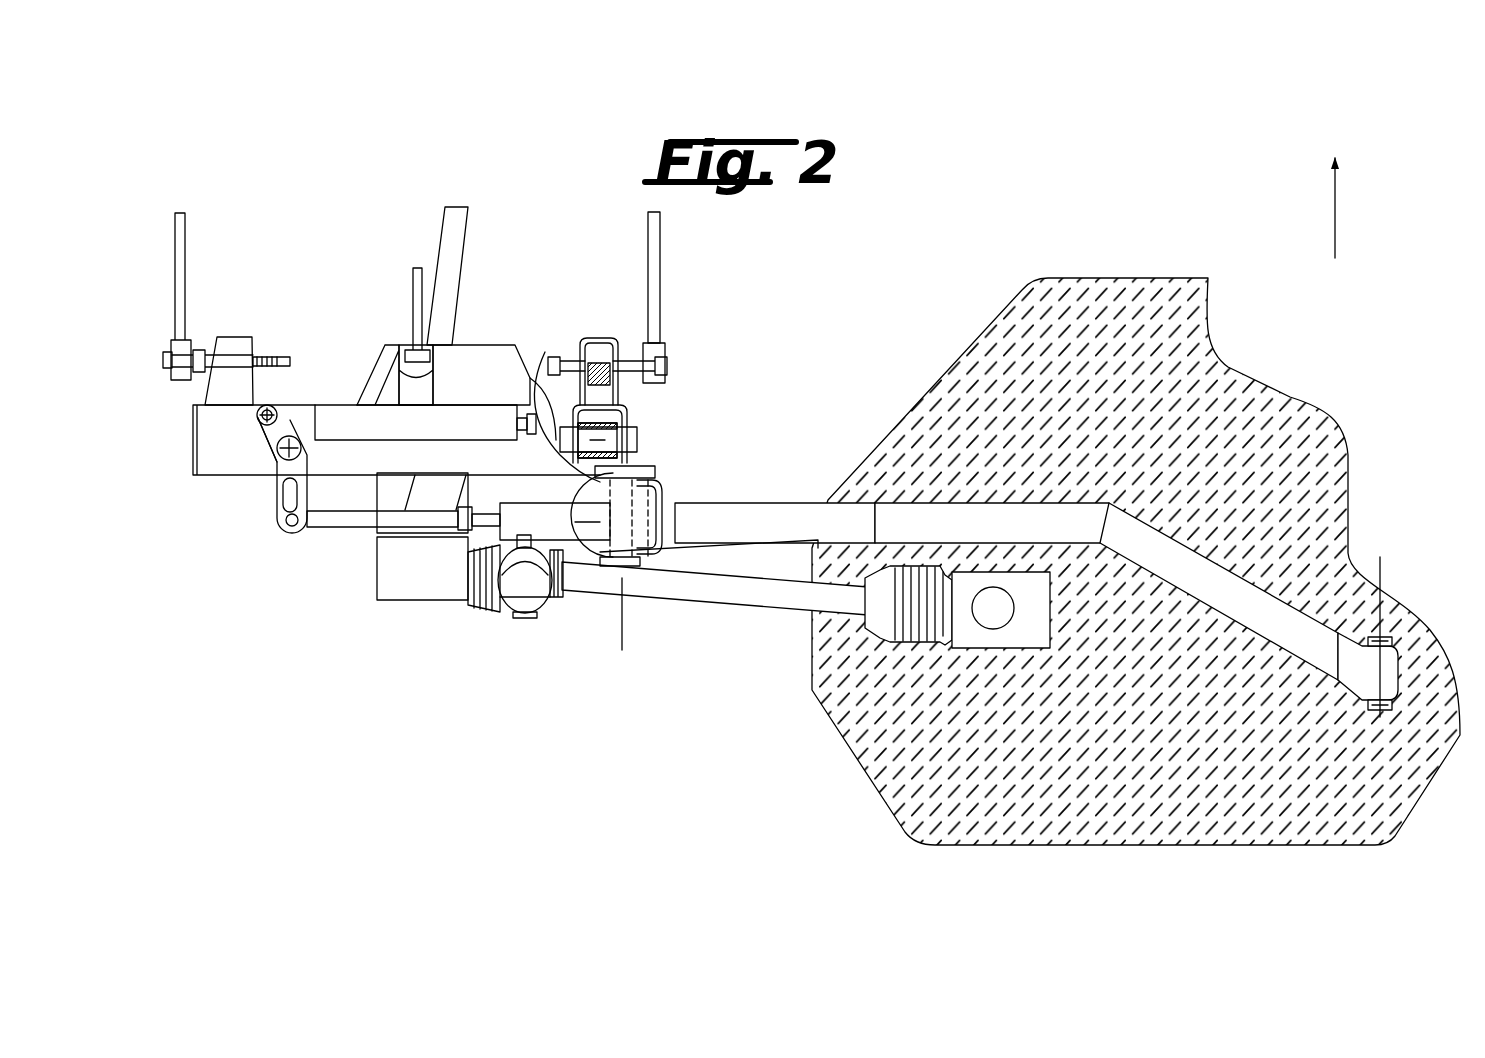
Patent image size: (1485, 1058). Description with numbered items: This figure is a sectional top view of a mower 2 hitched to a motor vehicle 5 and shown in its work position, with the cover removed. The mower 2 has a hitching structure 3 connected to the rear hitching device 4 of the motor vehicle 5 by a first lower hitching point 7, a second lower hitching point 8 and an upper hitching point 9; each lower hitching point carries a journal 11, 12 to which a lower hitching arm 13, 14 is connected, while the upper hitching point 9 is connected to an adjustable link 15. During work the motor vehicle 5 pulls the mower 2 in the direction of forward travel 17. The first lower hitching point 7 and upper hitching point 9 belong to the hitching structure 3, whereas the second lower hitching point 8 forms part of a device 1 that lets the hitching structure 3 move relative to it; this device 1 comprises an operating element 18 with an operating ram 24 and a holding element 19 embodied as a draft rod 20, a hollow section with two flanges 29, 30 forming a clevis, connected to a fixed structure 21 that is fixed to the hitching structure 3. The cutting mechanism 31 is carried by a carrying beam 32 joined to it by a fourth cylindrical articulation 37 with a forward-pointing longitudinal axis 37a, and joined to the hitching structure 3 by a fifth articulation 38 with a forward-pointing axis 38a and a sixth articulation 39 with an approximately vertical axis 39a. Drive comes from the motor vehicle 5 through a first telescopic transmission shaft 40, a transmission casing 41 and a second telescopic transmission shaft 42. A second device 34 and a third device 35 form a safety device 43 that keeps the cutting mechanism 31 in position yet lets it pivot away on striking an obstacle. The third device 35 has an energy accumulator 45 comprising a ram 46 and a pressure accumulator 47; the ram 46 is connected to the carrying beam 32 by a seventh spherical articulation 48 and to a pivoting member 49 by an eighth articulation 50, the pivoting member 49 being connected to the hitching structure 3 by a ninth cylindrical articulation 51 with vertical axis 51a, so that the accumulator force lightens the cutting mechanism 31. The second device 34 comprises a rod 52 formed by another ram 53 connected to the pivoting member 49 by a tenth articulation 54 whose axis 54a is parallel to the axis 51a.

The device 1 is at (582, 334).
The mower 2 is at (1136, 274).
The hitching structure 3 is at (212, 462).
The rear hitching device 4 is at (193, 297).
The motor vehicle 5 is at (672, 276).
The first lower hitching point 7 is at (166, 372).
The second lower hitching point 8 is at (682, 356).
The upper hitching point 9 is at (409, 336).
The journal 11 is at (274, 355).
The journal 12 is at (638, 357).
The lower hitching arm 13 is at (187, 235).
The lower hitching arm 14 is at (655, 257).
The adjustable link 15 is at (412, 292).
The direction of forward travel 17 is at (1335, 223).
The operating element 18 is at (637, 405).
The holding element 19 is at (604, 333).
The draft rod 20 is at (548, 393).
The fixed structure 21 is at (634, 450).
The operating ram 24 is at (625, 402).
The flange 29 is at (550, 397).
The flange 30 is at (623, 373).
The cutting mechanism 31 is at (1220, 382).
The carrying beam 32 is at (1333, 538).
The second device 34 is at (351, 401).
The third device 35 is at (531, 626).
The fourth cylindrical articulation 37 is at (1392, 690).
The longitudinal axis 37a is at (1380, 560).
The fifth articulation 38 is at (650, 555).
The axis 38a is at (625, 626).
The sixth articulation 39 is at (602, 540).
The axis 39a is at (622, 540).
The first telescopic transmission shaft 40 is at (456, 232).
The transmission casing 41 is at (413, 588).
The second telescopic transmission shaft 42 is at (757, 595).
The safety device 43 is at (347, 540).
The energy accumulator 45 is at (508, 614).
The ram 46 is at (553, 520).
The pressure accumulator 47 is at (515, 610).
The seventh spherical articulation 48 is at (642, 520).
The pivoting member 49 is at (283, 502).
The eighth articulation 50 is at (293, 524).
The ninth cylindrical articulation 51 is at (292, 437).
The longitudinal axis 51a is at (277, 462).
The rod 52 is at (382, 396).
The other ram 53 is at (463, 420).
The tenth cylindrical articulation 54 is at (258, 424).
The longitudinal axis 54a is at (271, 410).